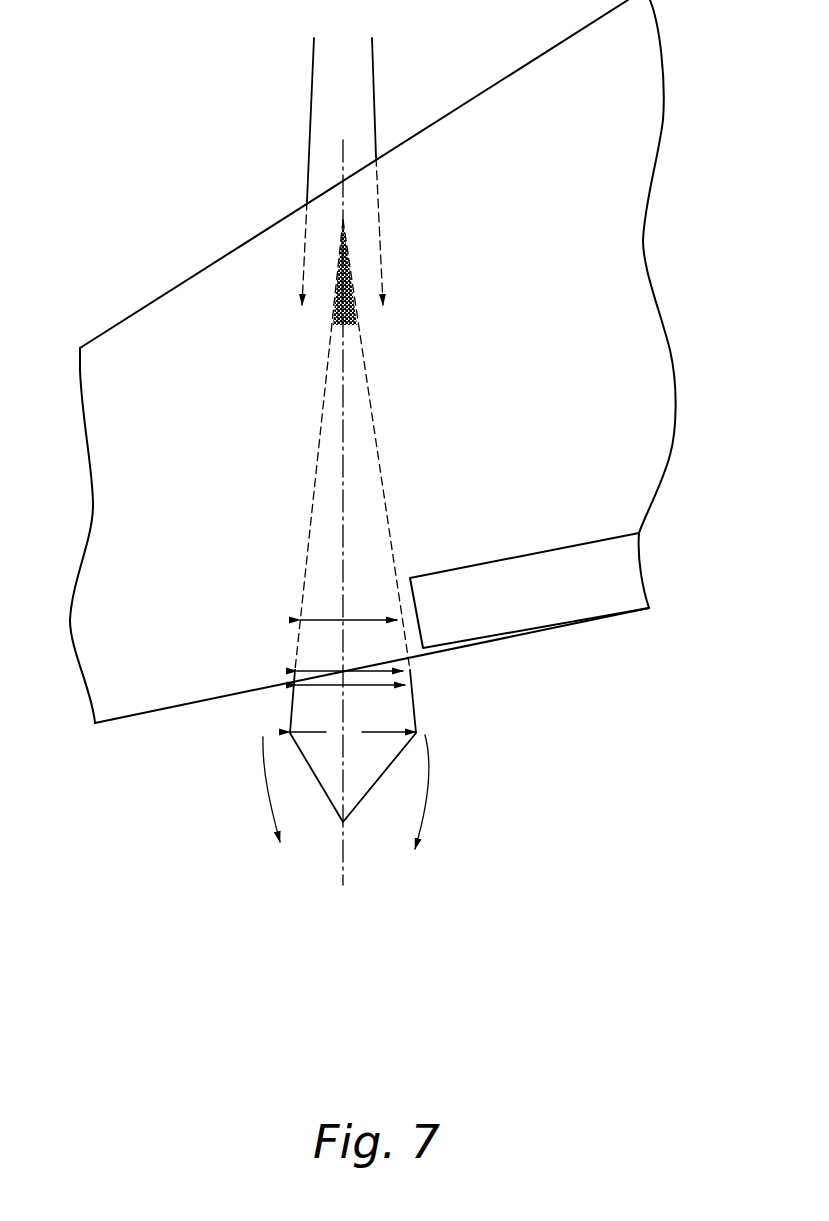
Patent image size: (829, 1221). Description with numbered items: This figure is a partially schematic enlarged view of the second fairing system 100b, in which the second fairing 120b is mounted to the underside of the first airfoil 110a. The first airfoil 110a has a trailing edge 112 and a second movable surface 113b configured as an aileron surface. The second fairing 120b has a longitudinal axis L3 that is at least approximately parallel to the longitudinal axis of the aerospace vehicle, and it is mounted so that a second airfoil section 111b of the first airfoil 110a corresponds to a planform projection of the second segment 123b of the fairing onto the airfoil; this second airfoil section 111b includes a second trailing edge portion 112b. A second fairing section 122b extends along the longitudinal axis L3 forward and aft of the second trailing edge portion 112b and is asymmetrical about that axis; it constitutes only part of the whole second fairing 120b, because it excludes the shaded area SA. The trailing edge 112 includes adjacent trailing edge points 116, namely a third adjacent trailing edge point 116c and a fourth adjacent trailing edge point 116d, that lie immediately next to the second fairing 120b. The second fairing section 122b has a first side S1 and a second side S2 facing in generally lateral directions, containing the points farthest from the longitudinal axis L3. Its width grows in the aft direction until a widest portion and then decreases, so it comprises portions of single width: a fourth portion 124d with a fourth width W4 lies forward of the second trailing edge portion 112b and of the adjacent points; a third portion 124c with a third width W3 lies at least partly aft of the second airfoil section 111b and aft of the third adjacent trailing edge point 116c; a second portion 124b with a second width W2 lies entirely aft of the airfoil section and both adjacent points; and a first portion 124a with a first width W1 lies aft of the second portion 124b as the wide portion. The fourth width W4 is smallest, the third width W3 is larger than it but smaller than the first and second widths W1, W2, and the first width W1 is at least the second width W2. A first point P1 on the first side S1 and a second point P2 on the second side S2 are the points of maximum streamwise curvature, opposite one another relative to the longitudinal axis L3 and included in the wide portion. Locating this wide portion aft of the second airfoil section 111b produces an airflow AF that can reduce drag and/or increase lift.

The second fairing system 100b is at (262, 147).
The first airfoil 110a is at (493, 122).
The longitudinal axis L3 is at (345, 498).
The shaded area SA is at (358, 312).
The second segment 123b is at (316, 477).
The second airfoil section 111b is at (330, 575).
The trailing edge 112 is at (120, 722).
The second trailing edge portion 112b is at (378, 658).
The second movable surface 113b is at (567, 603).
The adjacent trailing edge points 116 is at (554, 843).
The third adjacent trailing edge point 116c is at (423, 662).
The fourth adjacent trailing edge point 116d is at (295, 682).
The second fairing 120b is at (333, 823).
The second fairing section 122b is at (380, 785).
The first portion 124a is at (431, 732).
The second portion 124b is at (274, 693).
The third portion 124c is at (287, 671).
The fourth portion 124d is at (409, 616).
The first width W1 is at (353, 735).
The second width W2 is at (352, 687).
The third width W3 is at (321, 665).
The fourth width W4 is at (315, 617).
The first side S1 is at (417, 707).
The second side S2 is at (295, 682).
The first point P1 is at (437, 737).
The second point P2 is at (300, 712).
The airflow AF is at (346, 809).